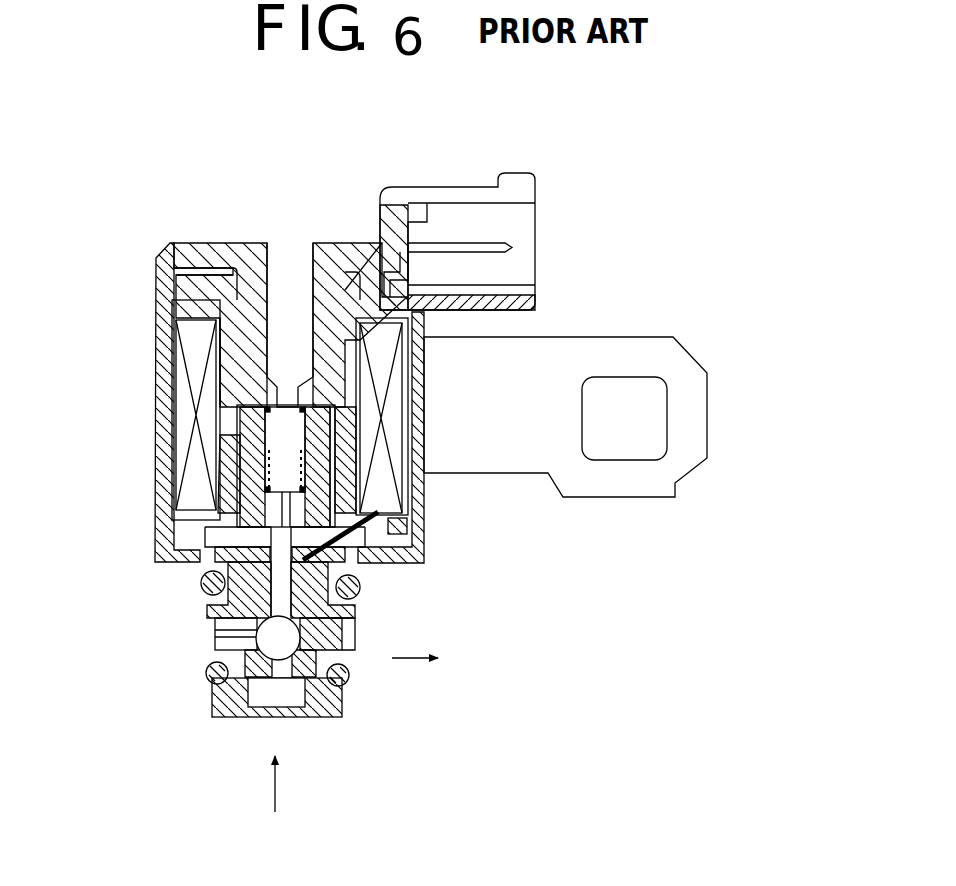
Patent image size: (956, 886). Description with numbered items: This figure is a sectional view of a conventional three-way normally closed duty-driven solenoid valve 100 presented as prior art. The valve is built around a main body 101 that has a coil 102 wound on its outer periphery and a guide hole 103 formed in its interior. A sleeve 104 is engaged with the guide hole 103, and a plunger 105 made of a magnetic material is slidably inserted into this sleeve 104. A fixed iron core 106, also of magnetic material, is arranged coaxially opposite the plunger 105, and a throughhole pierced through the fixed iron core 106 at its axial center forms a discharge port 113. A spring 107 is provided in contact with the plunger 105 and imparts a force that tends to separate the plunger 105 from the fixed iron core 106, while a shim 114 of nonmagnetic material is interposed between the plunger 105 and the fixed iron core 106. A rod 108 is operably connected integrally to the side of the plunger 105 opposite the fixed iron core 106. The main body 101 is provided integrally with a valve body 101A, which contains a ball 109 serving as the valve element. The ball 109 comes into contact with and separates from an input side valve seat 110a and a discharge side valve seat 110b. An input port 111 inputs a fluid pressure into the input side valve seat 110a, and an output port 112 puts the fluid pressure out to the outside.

The solenoid valve 100 is at (340, 234).
The main body 101 is at (154, 301).
The valve body 101A is at (364, 610).
The coil 102 is at (383, 477).
The guide hole 103 is at (394, 516).
The sleeve 104 is at (250, 456).
The plunger 105 is at (255, 484).
The fixed iron core 106 is at (255, 250).
The spring 107 is at (268, 432).
The rod 108 is at (212, 498).
The ball 109 is at (258, 638).
The input side valve seat 110a is at (216, 682).
The discharge side valve seat 110b is at (227, 598).
The input port 111 is at (287, 660).
The output port 112 is at (338, 640).
The discharge port 113 is at (287, 258).
The shim 114 is at (240, 407).